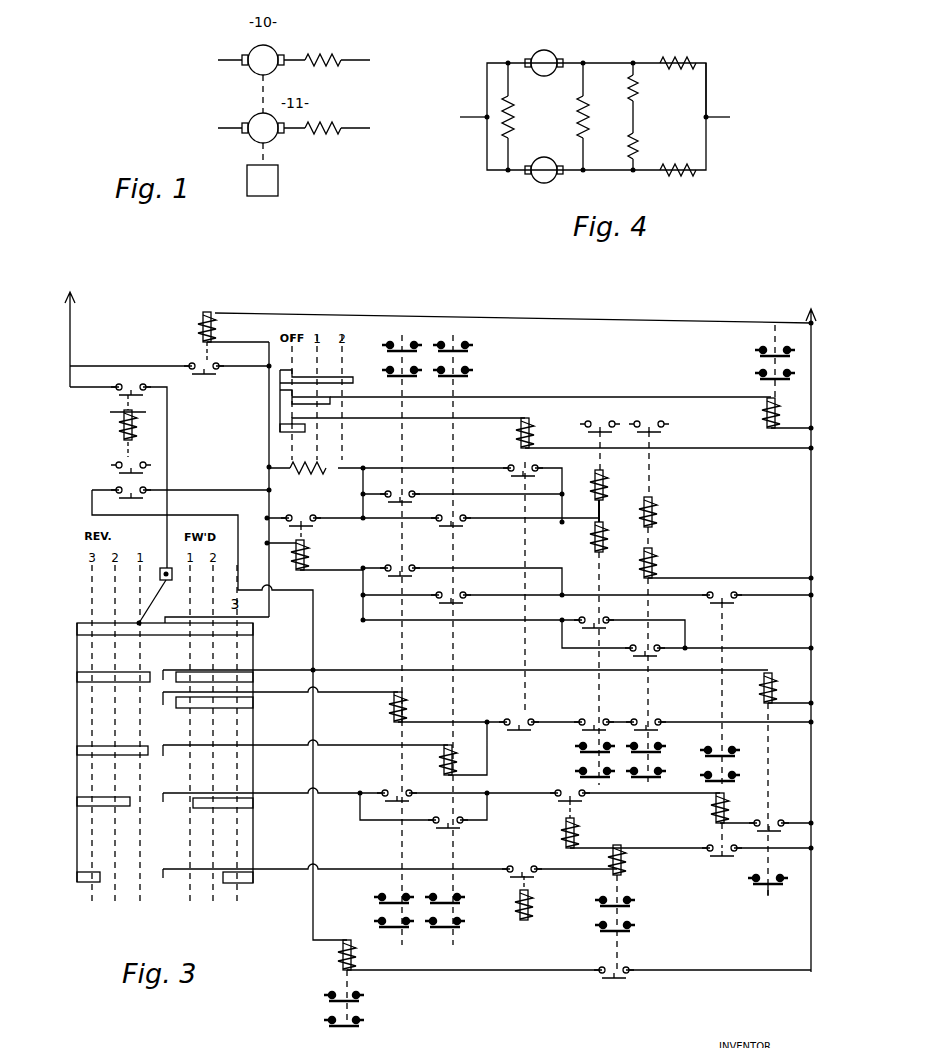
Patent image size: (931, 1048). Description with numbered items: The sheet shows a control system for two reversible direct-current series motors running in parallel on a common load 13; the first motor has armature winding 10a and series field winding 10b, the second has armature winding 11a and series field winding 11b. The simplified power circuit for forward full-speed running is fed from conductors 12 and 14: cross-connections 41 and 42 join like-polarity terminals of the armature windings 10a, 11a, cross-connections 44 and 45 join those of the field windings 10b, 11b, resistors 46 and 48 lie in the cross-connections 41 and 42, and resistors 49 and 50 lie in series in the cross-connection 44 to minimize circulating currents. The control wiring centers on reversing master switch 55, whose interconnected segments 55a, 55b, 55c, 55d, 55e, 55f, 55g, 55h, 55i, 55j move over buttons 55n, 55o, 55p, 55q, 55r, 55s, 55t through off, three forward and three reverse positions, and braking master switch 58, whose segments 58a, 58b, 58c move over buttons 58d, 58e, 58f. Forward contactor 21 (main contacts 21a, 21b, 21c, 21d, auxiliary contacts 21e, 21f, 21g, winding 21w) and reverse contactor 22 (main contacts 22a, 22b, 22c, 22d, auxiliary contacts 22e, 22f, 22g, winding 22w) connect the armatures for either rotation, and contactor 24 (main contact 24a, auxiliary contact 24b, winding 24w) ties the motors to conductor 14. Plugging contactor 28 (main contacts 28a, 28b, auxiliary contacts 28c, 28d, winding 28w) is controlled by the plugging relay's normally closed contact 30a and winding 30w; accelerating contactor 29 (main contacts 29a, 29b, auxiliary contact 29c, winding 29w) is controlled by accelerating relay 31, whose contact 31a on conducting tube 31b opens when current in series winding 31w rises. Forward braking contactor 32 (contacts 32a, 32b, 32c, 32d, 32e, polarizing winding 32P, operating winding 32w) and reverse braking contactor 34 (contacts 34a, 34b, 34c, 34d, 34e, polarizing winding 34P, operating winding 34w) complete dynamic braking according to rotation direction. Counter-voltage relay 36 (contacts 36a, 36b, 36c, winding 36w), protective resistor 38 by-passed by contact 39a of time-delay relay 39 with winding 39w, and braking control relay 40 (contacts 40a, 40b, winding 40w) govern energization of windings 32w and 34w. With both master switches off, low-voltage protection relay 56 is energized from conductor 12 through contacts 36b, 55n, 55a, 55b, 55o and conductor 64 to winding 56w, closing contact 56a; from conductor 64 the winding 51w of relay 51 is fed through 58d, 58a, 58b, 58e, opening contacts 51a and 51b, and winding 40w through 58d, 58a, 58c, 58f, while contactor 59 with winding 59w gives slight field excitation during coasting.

In FIG. 1, the armature winding 10a is at (251, 65).
In FIG. 4, the armature winding 10a is at (544, 50).
In FIG. 1, the series field winding 10b is at (334, 66).
In FIG. 4, the series field winding 10b is at (673, 57).
In FIG. 1, the armature winding 11a is at (248, 138).
In FIG. 4, the armature winding 11a is at (546, 183).
In FIG. 1, the series field winding 11b is at (326, 139).
In FIG. 4, the series field winding 11b is at (675, 177).
In FIG. 4, the conductor 12 is at (465, 112).
In FIG. 3, the conductor 12 is at (73, 322).
In FIG. 1, the common load 13 is at (272, 182).
In FIG. 4, the conductor 14 is at (720, 127).
In FIG. 3, the conductor 14 is at (815, 340).
In FIG. 4, the cross-connection 41 is at (518, 79).
In FIG. 4, the cross-connection 42 is at (586, 84).
In FIG. 4, the cross-connection 44 is at (636, 117).
In FIG. 4, the cross-connection 45 is at (708, 93).
In FIG. 4, the resistor 46 is at (514, 118).
In FIG. 4, the resistor 48 is at (589, 118).
In FIG. 4, the resistor 49 is at (641, 94).
In FIG. 4, the resistor 50 is at (641, 148).
In FIG. 3, the electromagnetic contactor 21 is at (400, 640).
In FIG. 3, the main contact 21a is at (402, 336).
In FIG. 3, the main contact 21b is at (402, 378).
In FIG. 3, the main contact 21c is at (394, 892).
In FIG. 3, the main contact 21d is at (390, 918).
In FIG. 3, the auxiliary contact 21e is at (406, 491).
In FIG. 3, the auxiliary contact 21f is at (406, 565).
In FIG. 3, the auxiliary contact 21g is at (394, 789).
In FIG. 3, the operating winding 21w is at (392, 704).
In FIG. 3, the electromagnetic contactor 22 is at (455, 640).
In FIG. 3, the main contact 22a is at (453, 336).
In FIG. 3, the main contact 22b is at (456, 376).
In FIG. 3, the main contact 22c is at (449, 894).
In FIG. 3, the main contact 22d is at (453, 920).
In FIG. 3, the auxiliary contact 22e is at (457, 527).
In FIG. 3, the auxiliary contact 22f is at (456, 602).
In FIG. 3, the auxiliary contact 22g is at (455, 828).
In FIG. 3, the operating winding 22w is at (442, 754).
In FIG. 3, the electromagnetic contactor 24 is at (774, 772).
In FIG. 3, the main contact 24a is at (768, 893).
In FIG. 3, the auxiliary contact 24b is at (776, 819).
In FIG. 3, the operating winding 24w is at (778, 686).
In FIG. 3, the electromagnetic plugging contactor 28 is at (720, 686).
In FIG. 3, the main contact 28a is at (726, 750).
In FIG. 3, the main contact 28b is at (727, 776).
In FIG. 3, the auxiliary contact 28c is at (722, 857).
In FIG. 3, the auxiliary contact 28d is at (728, 604).
In FIG. 3, the operating winding 28w is at (714, 812).
In FIG. 3, the electromagnetic accelerating contactor 29 is at (636, 907).
In FIG. 3, the main contact 29a is at (632, 906).
In FIG. 3, the main contact 29b is at (632, 931).
In FIG. 3, the auxiliary contact 29c is at (614, 982).
In FIG. 3, the operating winding 29w is at (626, 861).
In FIG. 3, the contact 30a is at (562, 788).
In FIG. 3, the operating winding 30w is at (564, 832).
In FIG. 3, the accelerating relay 31 is at (544, 913).
In FIG. 3, the contact 31a is at (533, 878).
In FIG. 3, the conducting tube 31b is at (519, 924).
In FIG. 3, the series-type operating winding 31w is at (536, 915).
In FIG. 3, the electromagnetic forward braking contactor 32 is at (601, 608).
In FIG. 3, the main contact 32a is at (588, 744).
In FIG. 3, the main contact 32b is at (588, 768).
In FIG. 3, the auxiliary contact 32c is at (600, 417).
In FIG. 3, the auxiliary contact 32d is at (594, 711).
In FIG. 3, the auxiliary contact 32e is at (592, 626).
In FIG. 3, the polarizing winding 32P is at (616, 485).
In FIG. 3, the operating winding 32w is at (592, 532).
In FIG. 3, the electromagnetic reverse braking contactor 34 is at (669, 608).
In FIG. 3, the main contact 34a is at (656, 746).
In FIG. 3, the main contact 34b is at (656, 770).
In FIG. 3, the auxiliary contact 34c is at (649, 417).
In FIG. 3, the auxiliary contact 34d is at (651, 718).
In FIG. 3, the auxiliary contact 34e is at (648, 640).
In FIG. 3, the polarizing winding 34P is at (666, 512).
In FIG. 3, the operating winding 34w is at (657, 560).
In FIG. 3, the counter-voltage relay 36 is at (121, 424).
In FIG. 3, the contact 36a is at (119, 478).
In FIG. 3, the contact 36b is at (134, 385).
In FIG. 3, the contact 36c is at (119, 502).
In FIG. 3, the operating winding 36w is at (122, 421).
In FIG. 3, the protective resistor 38 is at (314, 473).
In FIG. 3, the time delay relay 39 is at (318, 547).
In FIG. 3, the contact 39a is at (303, 512).
In FIG. 3, the operating winding 39w is at (308, 560).
In FIG. 3, the braking control relay 40 is at (509, 566).
In FIG. 3, the contact 40a is at (513, 465).
In FIG. 3, the contact 40b is at (517, 717).
In FIG. 3, the operating winding 40w is at (519, 428).
In FIG. 3, the relay 51 is at (756, 384).
In FIG. 3, the contact 51a is at (769, 345).
In FIG. 3, the contact 51b is at (769, 368).
In FIG. 3, the winding 51w is at (766, 406).
In FIG. 3, the reversing master switch 55 is at (175, 711).
In FIG. 3, the contact segment 55a is at (170, 568).
In FIG. 3, the contact segment 55b is at (253, 629).
In FIG. 3, the contact segment 55c is at (253, 678).
In FIG. 3, the contact segment 55d is at (253, 703).
In FIG. 3, the contact segment 55e is at (240, 805).
In FIG. 3, the contact segment 55f is at (253, 878).
In FIG. 3, the contact segment 55g is at (108, 672).
In FIG. 3, the contact segment 55h is at (104, 746).
In FIG. 3, the contact segment 55i is at (103, 797).
In FIG. 3, the contact segment 55j is at (92, 872).
In FIG. 3, the contact button 55n is at (160, 568).
In FIG. 3, the contact button 55o is at (142, 625).
In FIG. 3, the contact button 55p is at (95, 692).
In FIG. 3, the contact button 55q is at (128, 708).
In FIG. 3, the contact button 55r is at (157, 760).
In FIG. 3, the contact button 55s is at (163, 809).
In FIG. 3, the contact button 55t is at (162, 862).
In FIG. 3, the low voltage protection relay 56 is at (186, 321).
In FIG. 3, the contact 56a is at (216, 360).
In FIG. 3, the operating winding 56w is at (200, 322).
In FIG. 3, the master switch 58 is at (307, 400).
In FIG. 3, the contact segment 58a is at (349, 377).
In FIG. 3, the contact segment 58b is at (330, 401).
In FIG. 3, the contact segment 58c is at (306, 428).
In FIG. 3, the contact button 58d is at (280, 380).
In FIG. 3, the contact button 58e is at (292, 401).
In FIG. 3, the contact button 58f is at (280, 428).
In FIG. 3, the contactor 59 is at (361, 983).
In FIG. 3, the operating winding 59w is at (357, 954).
In FIG. 3, the conductor 64 is at (268, 478).